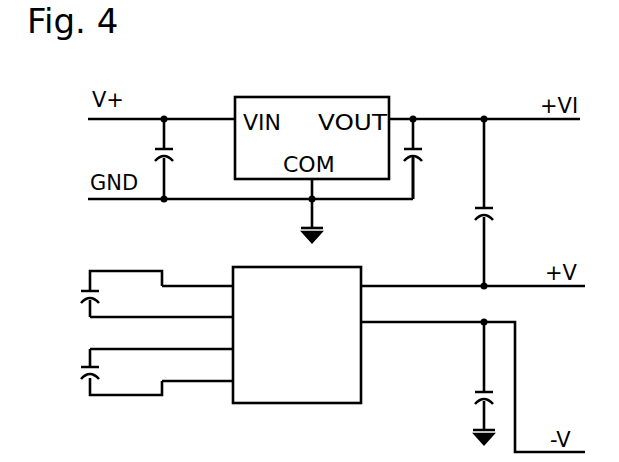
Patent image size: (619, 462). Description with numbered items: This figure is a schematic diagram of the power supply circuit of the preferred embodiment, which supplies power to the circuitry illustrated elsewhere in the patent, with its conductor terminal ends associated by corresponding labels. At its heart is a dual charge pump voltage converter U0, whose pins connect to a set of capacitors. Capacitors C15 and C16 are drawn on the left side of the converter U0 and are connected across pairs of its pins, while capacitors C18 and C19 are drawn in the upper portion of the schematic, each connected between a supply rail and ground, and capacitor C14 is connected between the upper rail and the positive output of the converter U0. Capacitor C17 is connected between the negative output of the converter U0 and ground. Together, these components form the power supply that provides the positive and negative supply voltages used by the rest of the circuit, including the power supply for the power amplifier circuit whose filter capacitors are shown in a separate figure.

The capacitor C14 is at (508, 202).
The capacitor C15 is at (121, 294).
The capacitor C16 is at (121, 372).
The capacitor C17 is at (460, 383).
The capacitor C18 is at (188, 159).
The capacitor C19 is at (437, 159).
The dual charge pump voltage converter U0 is at (298, 336).